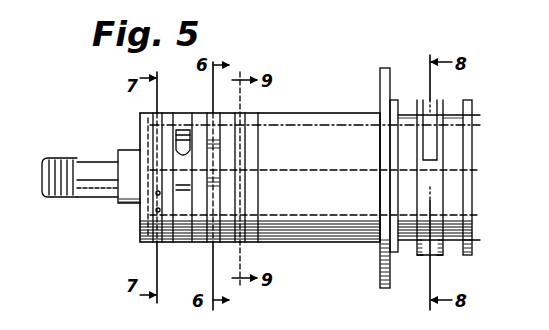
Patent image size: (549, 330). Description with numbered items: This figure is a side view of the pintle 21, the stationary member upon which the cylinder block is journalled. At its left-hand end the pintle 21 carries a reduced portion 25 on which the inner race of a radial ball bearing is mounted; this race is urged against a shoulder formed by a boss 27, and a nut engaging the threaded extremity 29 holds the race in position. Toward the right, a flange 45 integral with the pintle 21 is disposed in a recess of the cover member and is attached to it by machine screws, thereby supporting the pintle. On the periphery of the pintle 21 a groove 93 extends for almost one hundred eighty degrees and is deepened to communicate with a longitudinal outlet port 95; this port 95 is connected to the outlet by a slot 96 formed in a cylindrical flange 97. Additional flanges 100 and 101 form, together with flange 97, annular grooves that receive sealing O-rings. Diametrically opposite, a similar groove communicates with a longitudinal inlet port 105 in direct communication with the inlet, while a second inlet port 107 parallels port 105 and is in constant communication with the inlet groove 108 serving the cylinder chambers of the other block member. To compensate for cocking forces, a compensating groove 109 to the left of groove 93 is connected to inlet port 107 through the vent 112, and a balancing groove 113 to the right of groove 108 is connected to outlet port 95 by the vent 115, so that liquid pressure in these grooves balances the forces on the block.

The pintle 21 is at (305, 113).
The reduced portion 25 is at (78, 196).
The boss 27 is at (125, 155).
The threaded extremity 29 is at (58, 160).
The flange 45 is at (385, 68).
The groove 93 is at (183, 130).
The port 95 is at (355, 128).
The slot 96 is at (430, 142).
The cylindrical flange 97 is at (432, 256).
The flange 100 is at (394, 100).
The flange 101 is at (470, 232).
The port 105 is at (156, 195).
The port 107 is at (460, 176).
The inlet groove 108 is at (218, 199).
The groove 109 is at (157, 148).
The vent 112 is at (156, 211).
The balancing groove 113 is at (243, 153).
The vent 115 is at (245, 118).